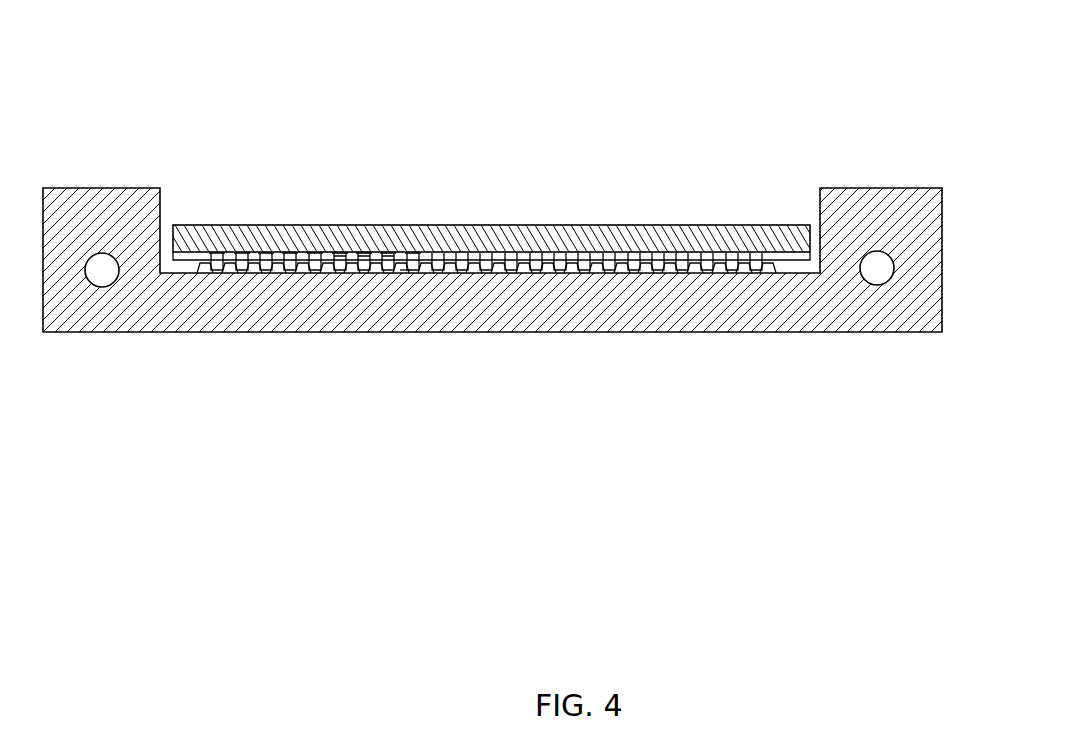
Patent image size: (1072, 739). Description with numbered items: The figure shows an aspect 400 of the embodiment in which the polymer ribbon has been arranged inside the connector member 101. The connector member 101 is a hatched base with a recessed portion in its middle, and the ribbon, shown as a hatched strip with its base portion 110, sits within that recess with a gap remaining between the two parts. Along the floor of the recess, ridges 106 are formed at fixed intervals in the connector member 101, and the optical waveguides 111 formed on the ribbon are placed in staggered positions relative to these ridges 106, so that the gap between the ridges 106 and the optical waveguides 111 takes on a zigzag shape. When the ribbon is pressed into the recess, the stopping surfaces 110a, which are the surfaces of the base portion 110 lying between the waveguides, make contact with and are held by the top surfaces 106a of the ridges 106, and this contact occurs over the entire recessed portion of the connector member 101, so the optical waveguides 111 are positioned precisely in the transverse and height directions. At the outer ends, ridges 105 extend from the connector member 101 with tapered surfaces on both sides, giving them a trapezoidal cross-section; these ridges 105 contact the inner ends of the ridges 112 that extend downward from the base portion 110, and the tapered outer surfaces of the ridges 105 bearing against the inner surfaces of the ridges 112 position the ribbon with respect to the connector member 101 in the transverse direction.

The aspect 400 is at (945, 34).
The connector member 101 is at (942, 288).
The ridges 105 is at (212, 264).
The ridges 106 is at (400, 262).
The top surfaces 106a is at (350, 252).
The base portion 110 is at (566, 240).
The stopping surfaces 110a is at (363, 253).
The optical waveguides 111 is at (405, 257).
The ridges 112 is at (183, 227).